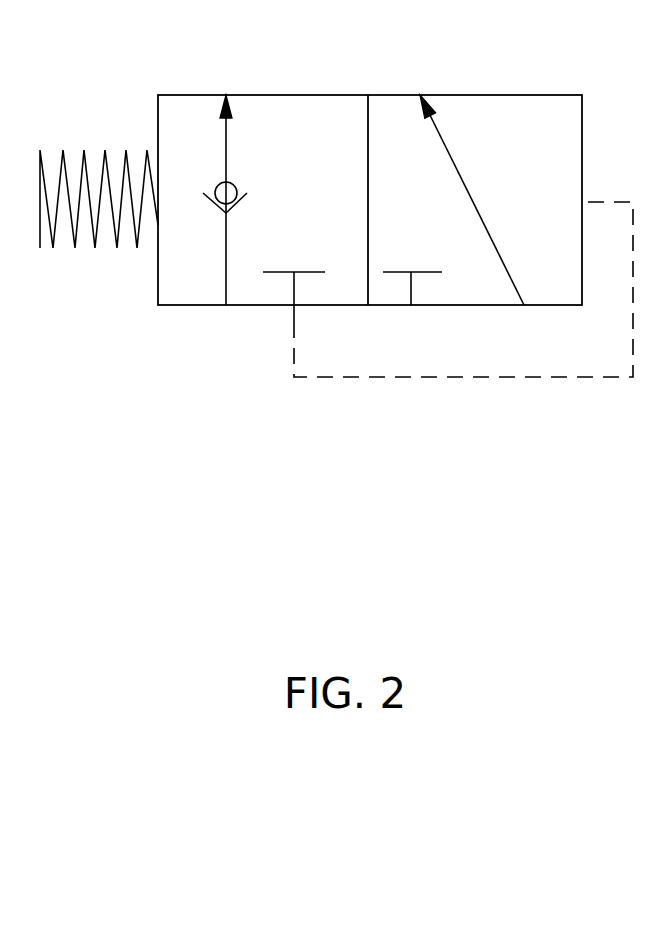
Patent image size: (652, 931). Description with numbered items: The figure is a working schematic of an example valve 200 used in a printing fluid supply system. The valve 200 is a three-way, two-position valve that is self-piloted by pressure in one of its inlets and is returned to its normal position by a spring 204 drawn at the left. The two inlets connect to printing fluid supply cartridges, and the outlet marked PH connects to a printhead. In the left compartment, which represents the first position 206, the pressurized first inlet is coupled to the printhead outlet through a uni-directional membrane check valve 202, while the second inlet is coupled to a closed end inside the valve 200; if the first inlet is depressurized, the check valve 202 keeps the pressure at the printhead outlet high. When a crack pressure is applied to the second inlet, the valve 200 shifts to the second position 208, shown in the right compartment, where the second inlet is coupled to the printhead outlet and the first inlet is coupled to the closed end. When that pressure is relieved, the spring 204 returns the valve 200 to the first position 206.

The valve 200 is at (482, 558).
The uni-directional membrane check valve 202 is at (212, 205).
The spring 204 is at (75, 248).
The first position 206 is at (170, 305).
The second position 208 is at (497, 306).